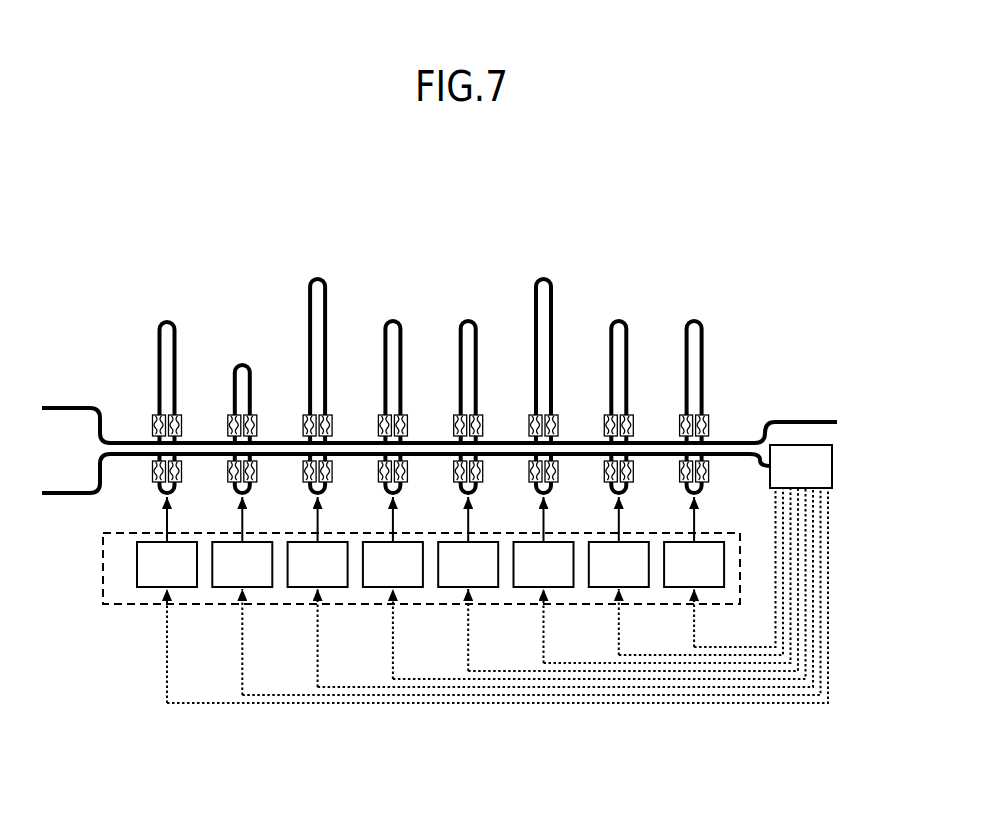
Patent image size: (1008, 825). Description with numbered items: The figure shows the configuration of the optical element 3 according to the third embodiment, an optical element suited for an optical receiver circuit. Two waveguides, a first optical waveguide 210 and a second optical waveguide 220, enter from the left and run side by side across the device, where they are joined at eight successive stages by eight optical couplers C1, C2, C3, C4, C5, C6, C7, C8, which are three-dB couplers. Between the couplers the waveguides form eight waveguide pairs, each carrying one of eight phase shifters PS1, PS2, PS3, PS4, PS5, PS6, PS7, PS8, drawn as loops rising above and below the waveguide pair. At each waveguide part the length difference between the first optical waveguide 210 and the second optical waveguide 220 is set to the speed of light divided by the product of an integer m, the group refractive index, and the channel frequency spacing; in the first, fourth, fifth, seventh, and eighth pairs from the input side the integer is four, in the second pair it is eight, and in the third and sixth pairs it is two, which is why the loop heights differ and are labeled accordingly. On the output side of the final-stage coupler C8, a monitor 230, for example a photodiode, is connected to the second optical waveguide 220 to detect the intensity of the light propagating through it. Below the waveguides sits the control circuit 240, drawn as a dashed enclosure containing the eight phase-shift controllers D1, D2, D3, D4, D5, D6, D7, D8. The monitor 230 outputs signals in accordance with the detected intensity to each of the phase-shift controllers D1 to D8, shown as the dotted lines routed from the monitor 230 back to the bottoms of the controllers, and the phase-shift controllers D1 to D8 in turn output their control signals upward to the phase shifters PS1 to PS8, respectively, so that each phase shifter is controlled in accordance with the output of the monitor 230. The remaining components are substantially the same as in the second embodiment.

The optical element 3 is at (664, 198).
The first optical waveguide 210 is at (68, 405).
The second optical waveguide 220 is at (68, 496).
The monitor 230 is at (832, 468).
The control circuit 240 is at (128, 606).
The phase shifter PS1 is at (143, 412).
The phase shifter PS2 is at (221, 422).
The phase shifter PS3 is at (296, 422).
The phase shifter PS4 is at (372, 422).
The phase shifter PS5 is at (447, 422).
The phase shifter PS6 is at (522, 422).
The phase shifter PS7 is at (598, 422).
The phase shifter PS8 is at (673, 422).
The optical coupler C1 is at (205, 463).
The optical coupler C2 is at (280, 463).
The optical coupler C3 is at (355, 463).
The optical coupler C4 is at (431, 463).
The optical coupler C5 is at (506, 463).
The optical coupler C6 is at (581, 463).
The optical coupler C7 is at (657, 463).
The optical coupler C8 is at (732, 463).
The phase-shift controller D1 is at (189, 589).
The phase-shift controller D2 is at (264, 589).
The phase-shift controller D3 is at (340, 589).
The phase-shift controller D4 is at (415, 589).
The phase-shift controller D5 is at (490, 589).
The phase-shift controller D6 is at (565, 589).
The phase-shift controller D7 is at (641, 589).
The phase-shift controller D8 is at (724, 562).